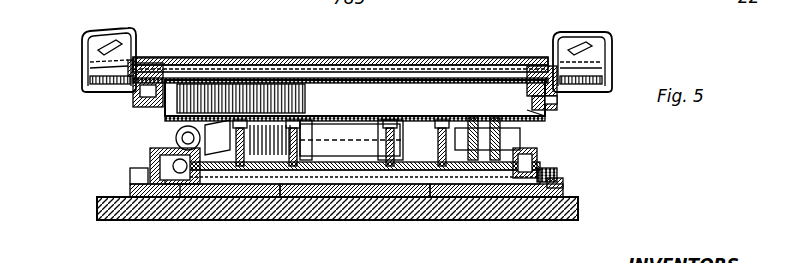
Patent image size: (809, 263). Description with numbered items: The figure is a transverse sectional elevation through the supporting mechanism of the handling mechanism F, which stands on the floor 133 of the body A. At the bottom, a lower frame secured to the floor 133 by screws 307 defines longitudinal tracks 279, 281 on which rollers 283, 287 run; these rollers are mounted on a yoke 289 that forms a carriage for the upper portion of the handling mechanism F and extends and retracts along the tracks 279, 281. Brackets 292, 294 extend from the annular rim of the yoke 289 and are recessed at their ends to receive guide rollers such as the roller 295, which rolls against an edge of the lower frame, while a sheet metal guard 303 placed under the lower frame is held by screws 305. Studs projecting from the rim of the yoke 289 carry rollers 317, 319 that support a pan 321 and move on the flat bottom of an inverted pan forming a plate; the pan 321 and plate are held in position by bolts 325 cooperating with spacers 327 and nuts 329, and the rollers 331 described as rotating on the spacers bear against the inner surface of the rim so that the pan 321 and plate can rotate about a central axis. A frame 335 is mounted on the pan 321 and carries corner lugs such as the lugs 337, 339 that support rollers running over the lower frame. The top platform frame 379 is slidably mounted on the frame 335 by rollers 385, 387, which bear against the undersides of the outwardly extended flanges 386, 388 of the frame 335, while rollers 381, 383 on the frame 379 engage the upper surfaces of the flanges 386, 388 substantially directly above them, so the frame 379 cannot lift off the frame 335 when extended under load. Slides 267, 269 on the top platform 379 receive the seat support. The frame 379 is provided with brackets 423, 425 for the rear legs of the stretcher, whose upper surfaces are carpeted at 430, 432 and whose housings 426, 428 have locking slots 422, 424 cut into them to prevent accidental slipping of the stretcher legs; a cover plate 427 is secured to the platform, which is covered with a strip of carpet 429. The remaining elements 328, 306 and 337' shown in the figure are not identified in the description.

The floor 133 is at (108, 188).
The roller 287 is at (170, 200).
The bracket 294 is at (188, 200).
The guide roller 295 is at (205, 200).
The roller 283 is at (528, 200).
The yoke 289 is at (320, 192).
The bracket 292 is at (506, 196).
The sheet metal guard 303 is at (390, 190).
The body A is at (487, 254).
The handling mechanism F is at (305, 241).
The frame 335 is at (145, 130).
The roller 319 is at (210, 116).
The grating 331 is at (237, 162).
The cylinder end cap 328 is at (302, 116).
The nut 329 is at (394, 120).
The spacer 327 is at (276, 124).
The pan 321 is at (292, 145).
The top platform frame 379 is at (148, 62).
The strip of carpet 429 is at (372, 63).
The cover plate 427 is at (382, 78).
The roller 383 is at (168, 78).
The lug 337 is at (351, 95).
The bolt 325 is at (272, 185).
The bolt 306 is at (486, 192).
The lug 339 is at (173, 130).
The track 281 is at (155, 157).
The screw 307 is at (130, 172).
The shaft 337' is at (531, 140).
The track 279 is at (540, 158).
The screw 305 is at (566, 186).
The flange 386 is at (134, 96).
The roller 385 is at (163, 107).
The slide 269 is at (136, 58).
The housing 426 is at (96, 36).
The bracket 423 is at (84, 58).
The locking slot 422 is at (120, 13).
The carpet 430 is at (104, 68).
The roller 317 is at (506, 62).
The roller 381 is at (540, 50).
The flange 388 is at (558, 100).
The roller 387 is at (535, 108).
The slide 267 is at (560, 32).
The locking slot 424 is at (570, 32).
The housing 428 is at (600, 40).
The bracket 425 is at (606, 48).
The carpet 432 is at (606, 66).